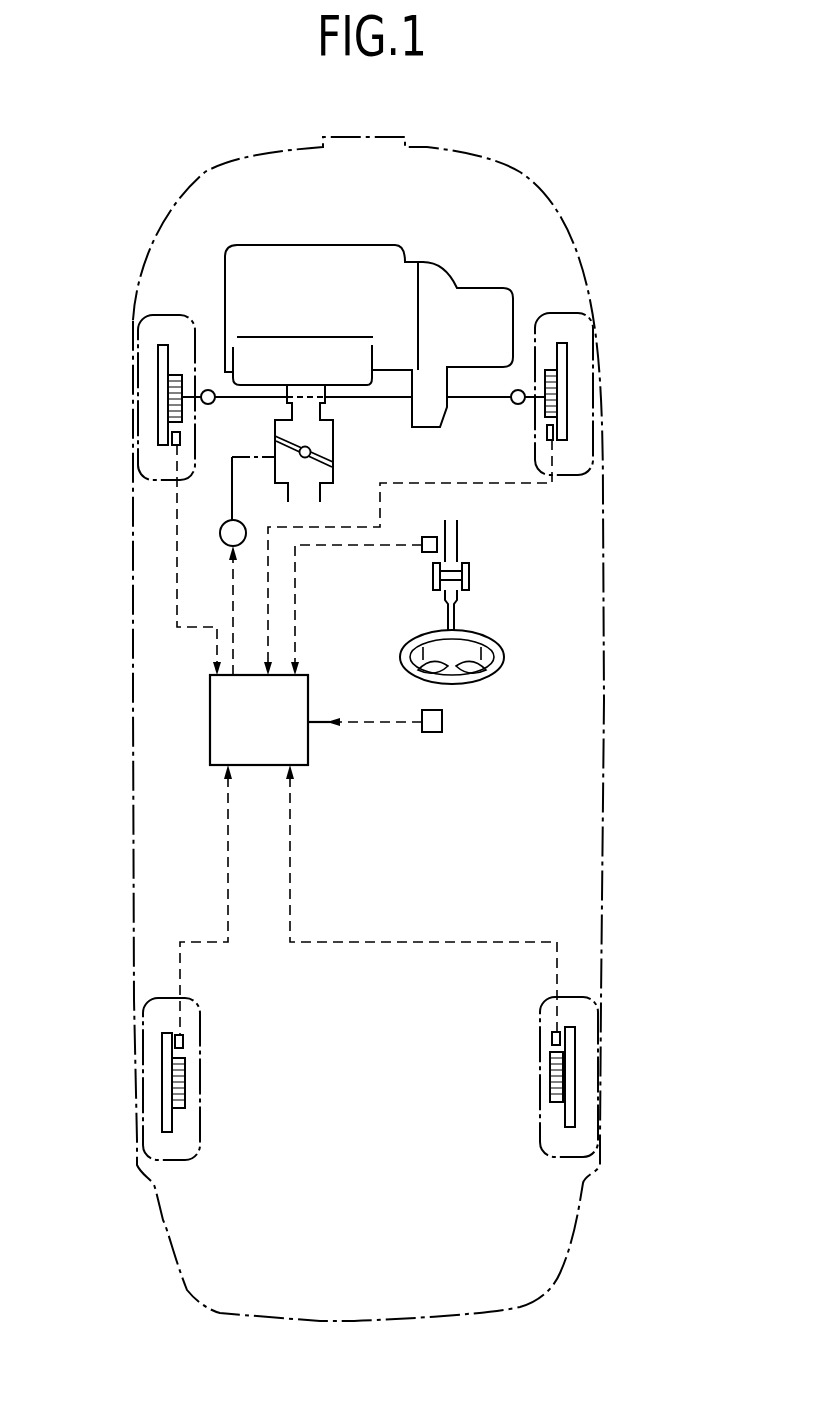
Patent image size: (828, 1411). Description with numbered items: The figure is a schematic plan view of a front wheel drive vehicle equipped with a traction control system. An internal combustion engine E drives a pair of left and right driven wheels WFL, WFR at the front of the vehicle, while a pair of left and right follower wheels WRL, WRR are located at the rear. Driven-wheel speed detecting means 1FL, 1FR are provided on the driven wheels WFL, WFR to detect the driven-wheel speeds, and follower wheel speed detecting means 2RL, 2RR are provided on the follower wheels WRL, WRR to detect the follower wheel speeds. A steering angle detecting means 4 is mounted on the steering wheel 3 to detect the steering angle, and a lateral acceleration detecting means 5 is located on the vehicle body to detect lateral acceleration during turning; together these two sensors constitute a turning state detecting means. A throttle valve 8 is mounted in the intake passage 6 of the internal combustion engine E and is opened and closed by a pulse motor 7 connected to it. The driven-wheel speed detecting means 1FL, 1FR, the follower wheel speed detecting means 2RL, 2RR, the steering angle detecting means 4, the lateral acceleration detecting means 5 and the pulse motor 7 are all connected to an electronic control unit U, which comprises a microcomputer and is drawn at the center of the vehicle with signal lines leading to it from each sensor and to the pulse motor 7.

The internal combustion engine E is at (307, 252).
The left driven wheel WFL is at (137, 362).
The right driven wheel WFR is at (593, 393).
The left follower wheel WRL is at (143, 1052).
The right follower wheel WRR is at (637, 1052).
The driven-wheel speed detecting means 1FL is at (174, 445).
The driven-wheel speed detecting means 1FR is at (548, 436).
The follower wheel speed detecting means 2RL is at (185, 1040).
The follower wheel speed detecting means 2RR is at (553, 1037).
The steering wheel 3 is at (504, 659).
The steering angle detecting means 4 is at (426, 535).
The lateral acceleration detecting means 5 is at (440, 733).
The intake passage 6 is at (312, 494).
The pulse motor 7 is at (226, 521).
The throttle valve 8 is at (311, 448).
The electronic control unit U is at (263, 737).